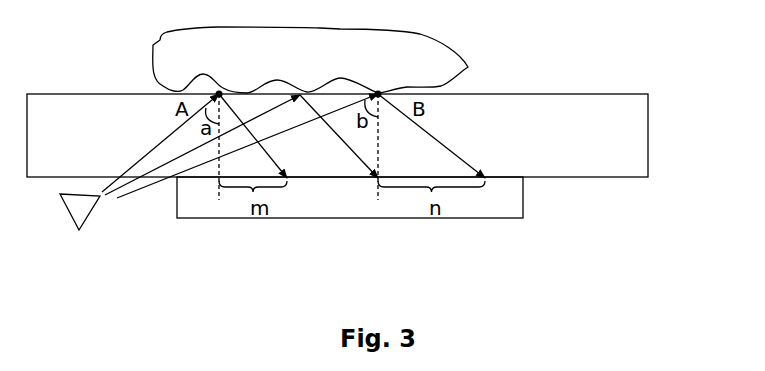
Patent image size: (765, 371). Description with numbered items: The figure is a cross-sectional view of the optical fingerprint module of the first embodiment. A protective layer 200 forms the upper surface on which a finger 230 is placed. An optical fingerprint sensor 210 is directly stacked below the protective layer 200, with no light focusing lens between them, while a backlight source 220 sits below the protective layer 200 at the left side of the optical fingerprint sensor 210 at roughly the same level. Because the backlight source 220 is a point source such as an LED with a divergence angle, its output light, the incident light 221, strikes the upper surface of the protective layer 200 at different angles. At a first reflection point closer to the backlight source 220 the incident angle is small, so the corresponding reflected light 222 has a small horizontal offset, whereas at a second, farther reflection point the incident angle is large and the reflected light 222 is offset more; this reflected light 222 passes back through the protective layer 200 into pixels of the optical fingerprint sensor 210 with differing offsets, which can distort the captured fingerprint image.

The protective layer 200 is at (613, 143).
The optical fingerprint sensor 210 is at (502, 198).
The backlight source 220 is at (80, 210).
The incident light 221 is at (133, 193).
The reflected light 222 is at (440, 143).
The finger 230 is at (447, 67).